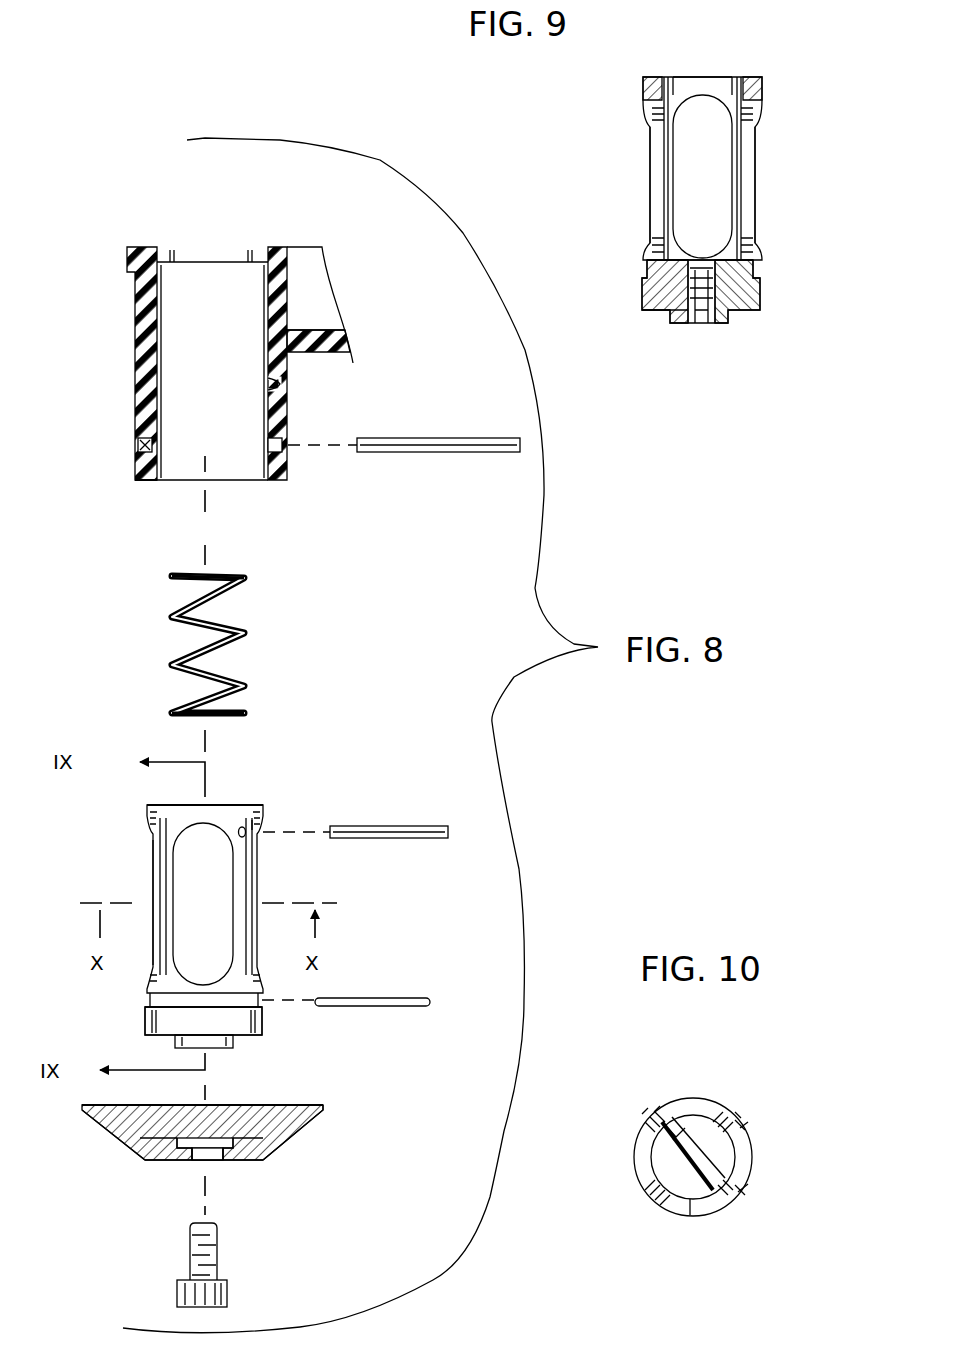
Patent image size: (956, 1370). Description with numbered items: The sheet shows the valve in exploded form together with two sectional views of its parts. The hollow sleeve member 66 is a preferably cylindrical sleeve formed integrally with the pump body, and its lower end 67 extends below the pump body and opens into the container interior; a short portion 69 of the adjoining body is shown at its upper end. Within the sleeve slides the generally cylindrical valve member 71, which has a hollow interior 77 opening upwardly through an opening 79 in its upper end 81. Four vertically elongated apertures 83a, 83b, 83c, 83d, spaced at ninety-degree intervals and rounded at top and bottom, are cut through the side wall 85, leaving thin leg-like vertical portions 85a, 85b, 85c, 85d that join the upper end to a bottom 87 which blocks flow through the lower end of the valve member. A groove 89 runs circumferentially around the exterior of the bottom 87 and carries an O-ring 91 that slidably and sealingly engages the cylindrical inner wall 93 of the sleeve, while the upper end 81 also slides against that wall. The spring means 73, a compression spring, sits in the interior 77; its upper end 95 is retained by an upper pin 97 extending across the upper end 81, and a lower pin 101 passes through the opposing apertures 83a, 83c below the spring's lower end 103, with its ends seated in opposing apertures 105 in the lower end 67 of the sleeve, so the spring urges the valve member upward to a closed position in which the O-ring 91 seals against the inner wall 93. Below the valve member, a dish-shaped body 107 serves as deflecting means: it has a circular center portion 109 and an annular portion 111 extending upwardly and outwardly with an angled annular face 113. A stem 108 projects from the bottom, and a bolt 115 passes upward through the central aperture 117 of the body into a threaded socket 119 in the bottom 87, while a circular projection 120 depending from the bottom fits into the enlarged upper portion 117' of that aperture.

In FIG. 8, the hollow sleeve member 66 is at (142, 376).
In FIG. 8, the lower end of hollow sleeve member 67 is at (148, 479).
In FIG. 8, the flange 69 is at (283, 263).
In FIG. 8, the valve member 71 is at (278, 868).
In FIG. 9, the valve member 71 is at (772, 128).
In FIG. 8, the spring means 73 is at (248, 628).
In FIG. 9, the hollow interior 77 is at (707, 110).
In FIG. 9, the opening 79 is at (712, 90).
In FIG. 8, the upper end 81 is at (208, 812).
In FIG. 9, the upper end 81 is at (645, 90).
In FIG. 10, the aperture 83a is at (750, 1160).
In FIG. 10, the aperture 83b is at (685, 1215).
In FIG. 9, the aperture 83c is at (718, 170).
In FIG. 10, the aperture 83c is at (635, 1158).
In FIG. 8, the aperture 83d is at (178, 870).
In FIG. 10, the aperture 83d is at (705, 1118).
In FIG. 10, the side wall 85 is at (748, 1112).
In FIG. 8, the leg-like vertical portion 85a is at (250, 850).
In FIG. 10, the leg-like vertical portion 85a is at (742, 1128).
In FIG. 10, the leg-like vertical portion 85b is at (733, 1200).
In FIG. 9, the leg-like vertical portion 85c is at (742, 215).
In FIG. 10, the leg-like vertical portion 85c is at (655, 1200).
In FIG. 8, the leg-like vertical portion 85d is at (165, 950).
In FIG. 9, the leg-like vertical portion 85d is at (660, 193).
In FIG. 10, the leg-like vertical portion 85d is at (666, 1114).
In FIG. 9, the bottom 87 is at (665, 298).
In FIG. 8, the groove 89 is at (180, 1005).
In FIG. 9, the groove 89 is at (760, 282).
In FIG. 8, the O-ring 91 is at (378, 1008).
In FIG. 8, the cylindrical inner wall 93 is at (262, 385).
In FIG. 8, the upper end of spring means 95 is at (232, 574).
In FIG. 8, the upper pin 97 is at (392, 828).
In FIG. 10, the upper pin 97 is at (695, 1113).
In FIG. 8, the lower pin 101 is at (415, 450).
In FIG. 8, the lower end of spring means 103 is at (228, 722).
In FIG. 8, the apertures 105 is at (145, 445).
In FIG. 8, the dish-shaped body 107 is at (284, 1160).
In FIG. 8, the stem 108 is at (220, 1045).
In FIG. 8, the circular center portion 109 is at (170, 1163).
In FIG. 8, the annular portion 111 is at (308, 1130).
In FIG. 8, the annular face 113 is at (285, 1110).
In FIG. 8, the bolt 115 is at (228, 1296).
In FIG. 8, the central aperture 117 is at (235, 1180).
In FIG. 8, the enlarged upper portion of aperture 117' is at (92, 1144).
In FIG. 9, the threaded socket 119 is at (698, 320).
In FIG. 9, the circular projection 120 is at (718, 320).